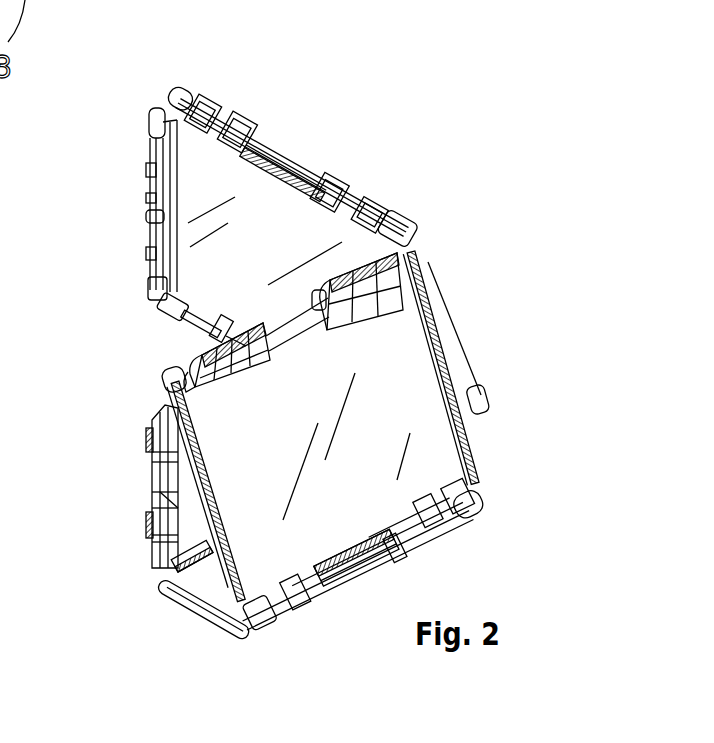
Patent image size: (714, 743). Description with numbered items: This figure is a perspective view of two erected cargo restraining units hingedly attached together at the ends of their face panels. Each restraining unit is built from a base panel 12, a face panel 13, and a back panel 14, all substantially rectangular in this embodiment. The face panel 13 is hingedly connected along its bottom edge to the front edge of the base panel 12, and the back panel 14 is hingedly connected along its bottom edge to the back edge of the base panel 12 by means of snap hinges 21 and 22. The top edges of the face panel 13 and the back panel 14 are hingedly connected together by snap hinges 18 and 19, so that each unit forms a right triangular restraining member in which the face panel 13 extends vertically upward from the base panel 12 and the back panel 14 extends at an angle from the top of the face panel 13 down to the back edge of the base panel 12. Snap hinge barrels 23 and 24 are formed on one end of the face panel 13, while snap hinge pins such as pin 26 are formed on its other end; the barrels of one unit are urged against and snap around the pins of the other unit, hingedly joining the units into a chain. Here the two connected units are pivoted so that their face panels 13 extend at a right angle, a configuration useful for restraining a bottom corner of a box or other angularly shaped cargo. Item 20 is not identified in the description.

The base panel 12 is at (214, 592).
The face panel 13 is at (208, 183).
The back panel 14 is at (407, 363).
The snap hinge 18 is at (358, 258).
The snap hinge 19 is at (236, 100).
The clip 20 is at (148, 200).
The snap hinge 21 is at (314, 612).
The snap hinge 22 is at (444, 544).
The snap hinge barrel 23 is at (134, 548).
The snap hinge barrel 24 is at (134, 465).
The snap hinge pin 26 is at (150, 217).